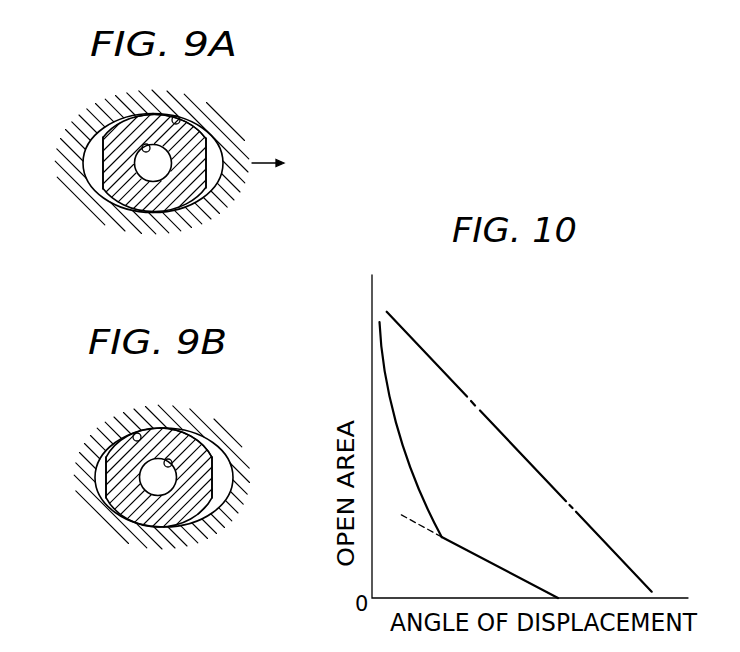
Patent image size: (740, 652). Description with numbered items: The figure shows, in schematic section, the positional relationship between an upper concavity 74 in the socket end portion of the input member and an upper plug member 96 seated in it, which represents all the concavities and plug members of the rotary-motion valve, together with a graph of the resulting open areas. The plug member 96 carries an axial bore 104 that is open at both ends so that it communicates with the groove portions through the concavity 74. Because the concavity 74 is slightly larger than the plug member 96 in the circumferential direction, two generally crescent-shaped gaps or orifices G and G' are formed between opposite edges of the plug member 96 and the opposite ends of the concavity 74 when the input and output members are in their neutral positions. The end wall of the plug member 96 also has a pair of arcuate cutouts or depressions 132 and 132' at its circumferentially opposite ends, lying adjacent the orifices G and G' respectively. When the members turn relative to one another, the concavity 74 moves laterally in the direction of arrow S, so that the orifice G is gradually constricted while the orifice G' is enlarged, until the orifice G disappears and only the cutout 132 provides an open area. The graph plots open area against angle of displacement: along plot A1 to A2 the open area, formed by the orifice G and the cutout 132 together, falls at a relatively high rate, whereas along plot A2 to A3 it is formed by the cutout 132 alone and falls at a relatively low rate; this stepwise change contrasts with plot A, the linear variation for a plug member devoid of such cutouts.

In FIG. 9A, the upper concavity 74 is at (181, 118).
In FIG. 9B, the upper concavity 74 is at (134, 434).
In FIG. 9A, the upper plug member 96 is at (208, 132).
In FIG. 9B, the upper plug member 96 is at (193, 448).
In FIG. 9A, the axial bore 104 is at (142, 146).
In FIG. 9B, the axial bore 104 is at (171, 459).
In FIG. 9A, the arcuate cutout or depression 132 is at (70, 186).
In FIG. 9B, the arcuate cutout or depression 132 is at (87, 506).
In FIG. 9A, the arcuate cutout or depression 132' is at (249, 172).
In FIG. 9B, the arcuate cutout or depression 132' is at (250, 506).
In FIG. 9A, the crescent-shaped gap or orifice G is at (143, 162).
In FIG. 9B, the crescent-shaped gap or orifice G is at (146, 477).
In FIG. 9A, the crescent-shaped gap or orifice G' is at (213, 163).
In FIG. 9B, the crescent-shaped gap or orifice G' is at (227, 477).
In FIG. 9A, the direction of lateral movement S is at (267, 161).
In FIG. 10, the plot of linear open-area variation A is at (516, 446).
In FIG. 10, the starting point of plot A1-A2 A1 is at (381, 325).
In FIG. 10, the transition point of plot A2 is at (443, 536).
In FIG. 10, the end point of plot A2- A3 is at (560, 597).